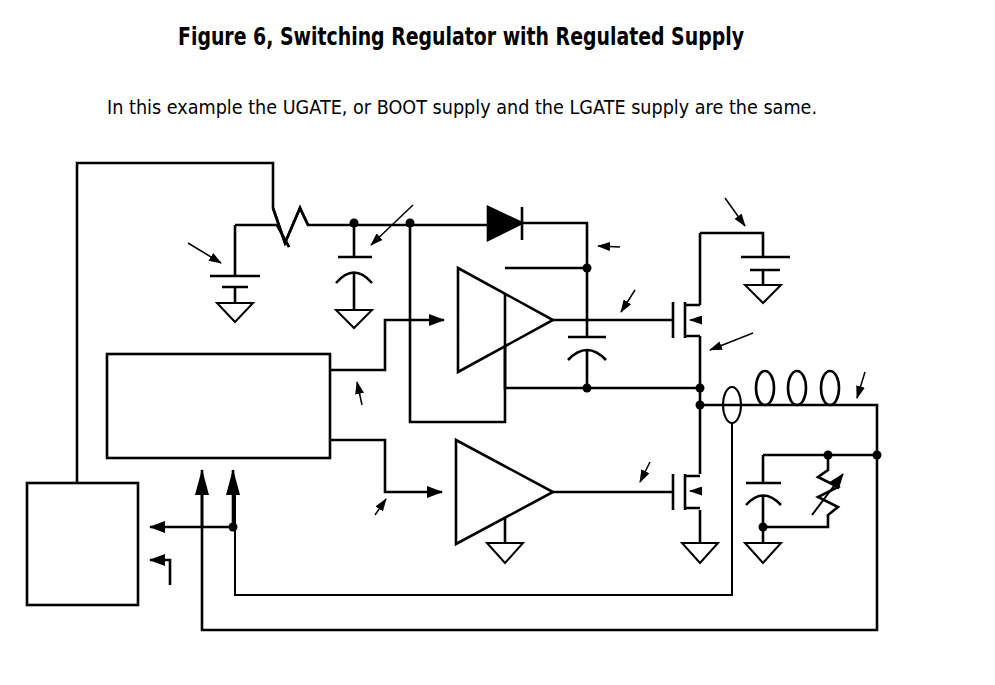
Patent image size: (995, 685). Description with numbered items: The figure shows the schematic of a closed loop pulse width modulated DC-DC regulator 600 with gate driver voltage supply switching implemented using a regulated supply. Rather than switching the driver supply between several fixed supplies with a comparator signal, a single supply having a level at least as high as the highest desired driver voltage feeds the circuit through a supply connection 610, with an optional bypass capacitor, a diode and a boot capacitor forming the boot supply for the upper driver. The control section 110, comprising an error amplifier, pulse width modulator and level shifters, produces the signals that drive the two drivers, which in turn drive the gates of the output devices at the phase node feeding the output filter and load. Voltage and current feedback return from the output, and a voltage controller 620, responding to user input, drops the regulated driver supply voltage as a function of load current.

The closed loop pulse width modulated DC-DC regulator 600 is at (815, 197).
The driver supply connection 610 is at (311, 250).
The control section 110 is at (193, 352).
The voltage controller 620 is at (50, 612).